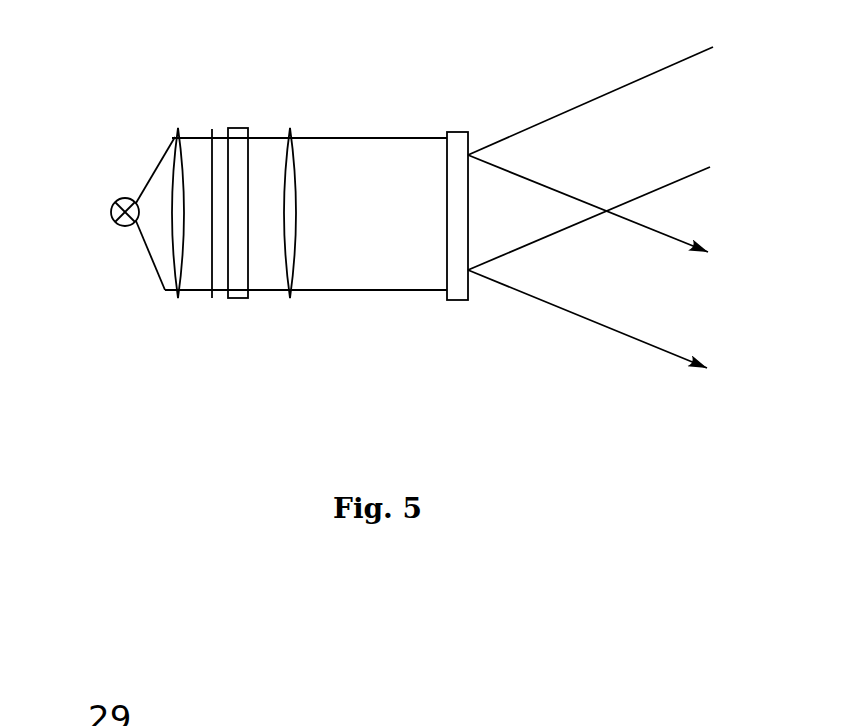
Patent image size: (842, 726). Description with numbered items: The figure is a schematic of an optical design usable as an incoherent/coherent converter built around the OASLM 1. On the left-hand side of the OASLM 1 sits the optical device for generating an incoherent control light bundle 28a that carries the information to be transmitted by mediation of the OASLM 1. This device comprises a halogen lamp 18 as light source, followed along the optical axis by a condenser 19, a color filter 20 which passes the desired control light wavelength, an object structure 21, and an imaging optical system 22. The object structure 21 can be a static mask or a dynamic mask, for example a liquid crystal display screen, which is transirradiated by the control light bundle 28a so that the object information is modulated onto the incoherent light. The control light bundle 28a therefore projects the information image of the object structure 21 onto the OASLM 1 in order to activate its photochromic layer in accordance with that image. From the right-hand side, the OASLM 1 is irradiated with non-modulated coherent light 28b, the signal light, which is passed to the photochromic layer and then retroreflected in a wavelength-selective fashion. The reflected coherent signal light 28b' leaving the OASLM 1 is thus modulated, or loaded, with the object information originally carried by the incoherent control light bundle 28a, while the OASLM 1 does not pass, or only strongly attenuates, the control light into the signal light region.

The OASLM 1 is at (455, 118).
The halogen lamp 18 is at (102, 203).
The condenser 19 is at (177, 127).
The color filter 20 is at (213, 117).
The object structure 21 is at (245, 120).
The imaging optical system 22 is at (297, 122).
The control light bundle 28a is at (353, 302).
The coherent light 28b is at (599, 149).
The reflected coherent signal light 28b' is at (601, 267).